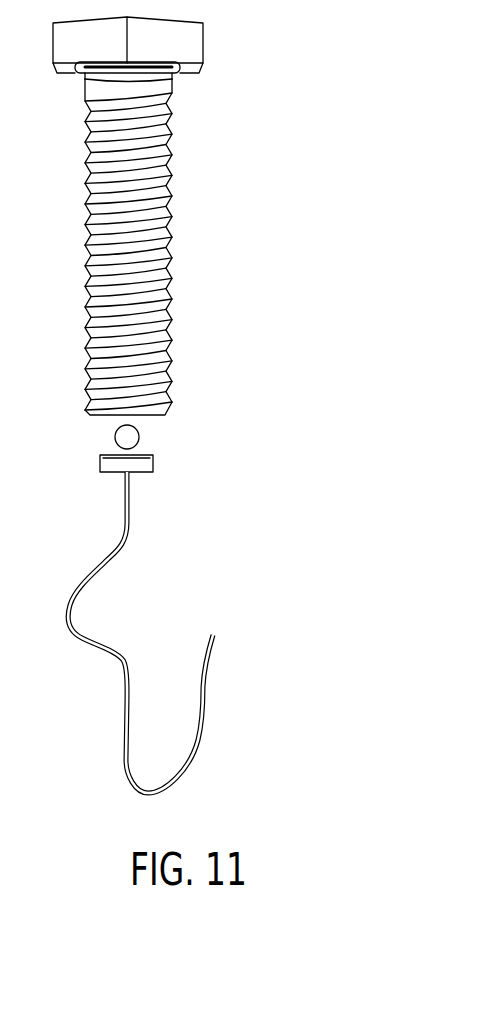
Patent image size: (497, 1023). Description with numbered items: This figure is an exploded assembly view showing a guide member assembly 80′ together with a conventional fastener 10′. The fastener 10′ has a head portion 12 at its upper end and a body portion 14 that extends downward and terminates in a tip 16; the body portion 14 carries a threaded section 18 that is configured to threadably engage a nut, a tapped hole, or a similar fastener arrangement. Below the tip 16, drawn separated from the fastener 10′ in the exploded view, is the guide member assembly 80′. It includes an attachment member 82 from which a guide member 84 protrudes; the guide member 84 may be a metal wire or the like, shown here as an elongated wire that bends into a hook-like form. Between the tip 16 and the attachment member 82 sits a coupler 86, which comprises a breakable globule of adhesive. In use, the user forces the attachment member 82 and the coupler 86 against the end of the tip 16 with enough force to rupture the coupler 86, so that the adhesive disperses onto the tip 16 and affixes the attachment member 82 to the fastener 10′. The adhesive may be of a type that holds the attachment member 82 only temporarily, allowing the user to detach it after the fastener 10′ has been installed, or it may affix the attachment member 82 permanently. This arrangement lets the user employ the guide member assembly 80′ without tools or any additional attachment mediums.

The fastener 10′ is at (267, 193).
The head portion 12 is at (242, 41).
The body portion 14 is at (173, 181).
The tip 16 is at (167, 415).
The threaded section 18 is at (186, 252).
The guide member assembly 80′ is at (182, 528).
The attachment member 82 is at (100, 460).
The guide member 84 is at (205, 695).
The coupler 86 is at (140, 438).